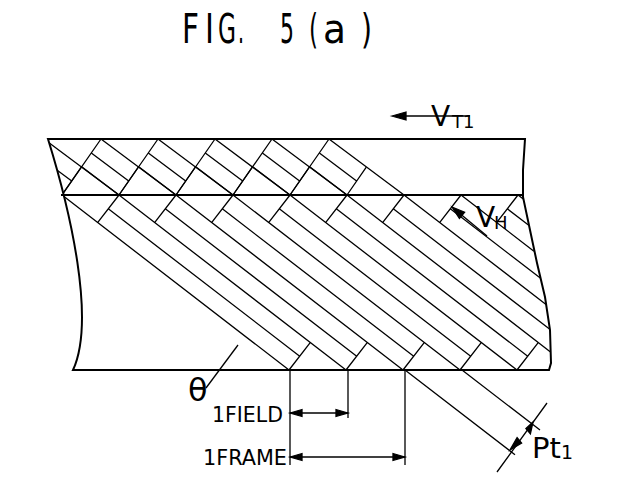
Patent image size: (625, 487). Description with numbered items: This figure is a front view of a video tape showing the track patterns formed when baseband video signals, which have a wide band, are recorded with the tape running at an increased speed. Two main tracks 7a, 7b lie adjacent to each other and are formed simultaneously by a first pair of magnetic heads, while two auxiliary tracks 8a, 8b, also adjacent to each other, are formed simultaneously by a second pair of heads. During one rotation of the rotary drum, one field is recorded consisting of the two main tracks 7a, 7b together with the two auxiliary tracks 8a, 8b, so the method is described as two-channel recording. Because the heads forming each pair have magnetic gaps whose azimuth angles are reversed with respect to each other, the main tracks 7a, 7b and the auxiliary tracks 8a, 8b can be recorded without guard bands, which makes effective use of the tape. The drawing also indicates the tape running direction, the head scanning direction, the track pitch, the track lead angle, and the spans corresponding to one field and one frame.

The main track 7a is at (136, 243).
The main track 7b is at (178, 250).
The auxiliary track 8a is at (92, 165).
The auxiliary track 8b is at (115, 158).